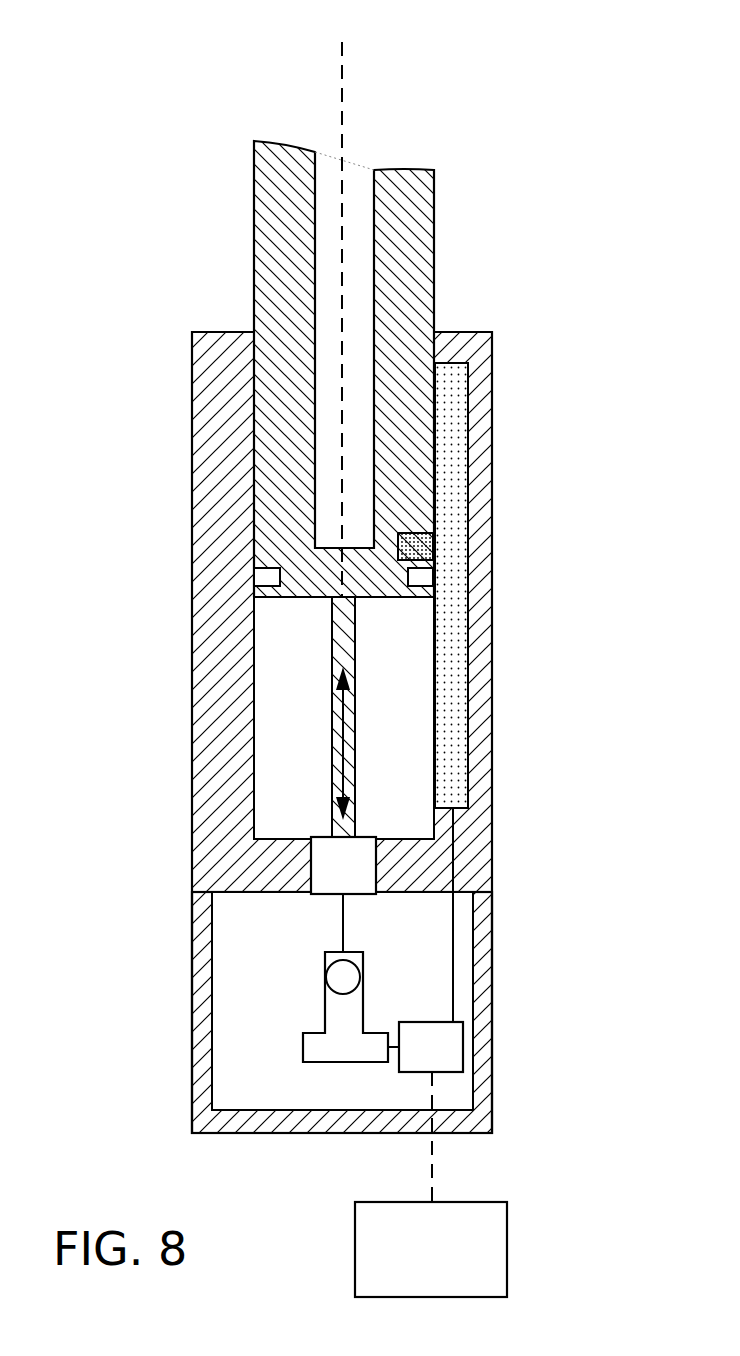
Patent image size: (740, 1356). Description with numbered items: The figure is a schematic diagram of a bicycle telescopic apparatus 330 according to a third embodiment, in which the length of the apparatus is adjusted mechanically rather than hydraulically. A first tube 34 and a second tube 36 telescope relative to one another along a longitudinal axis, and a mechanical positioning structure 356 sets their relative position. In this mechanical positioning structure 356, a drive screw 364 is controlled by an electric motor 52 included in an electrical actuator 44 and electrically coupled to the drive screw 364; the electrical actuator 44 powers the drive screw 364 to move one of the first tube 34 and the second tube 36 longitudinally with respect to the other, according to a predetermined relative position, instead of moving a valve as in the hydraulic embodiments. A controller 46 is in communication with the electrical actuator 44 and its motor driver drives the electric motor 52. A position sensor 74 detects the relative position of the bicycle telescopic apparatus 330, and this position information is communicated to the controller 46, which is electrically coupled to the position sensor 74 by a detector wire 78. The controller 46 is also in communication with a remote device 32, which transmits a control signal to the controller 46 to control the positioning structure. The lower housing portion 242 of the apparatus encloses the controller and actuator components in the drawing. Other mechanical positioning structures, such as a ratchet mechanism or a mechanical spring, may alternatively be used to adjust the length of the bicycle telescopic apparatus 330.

The bicycle telescopic apparatus 330 is at (581, 96).
The first tube 34 is at (480, 392).
The second tube 36 is at (407, 291).
The position sensor 74 is at (414, 632).
The drive screw 364 is at (343, 865).
The mechanical positioning structure 356 is at (296, 920).
The detector wire 78 is at (452, 960).
The housing base 242 is at (166, 968).
The electric motor 52 is at (343, 944).
The electrical actuator 44 is at (351, 1007).
The controller 46 is at (431, 1047).
The remote device 32 is at (431, 1184).